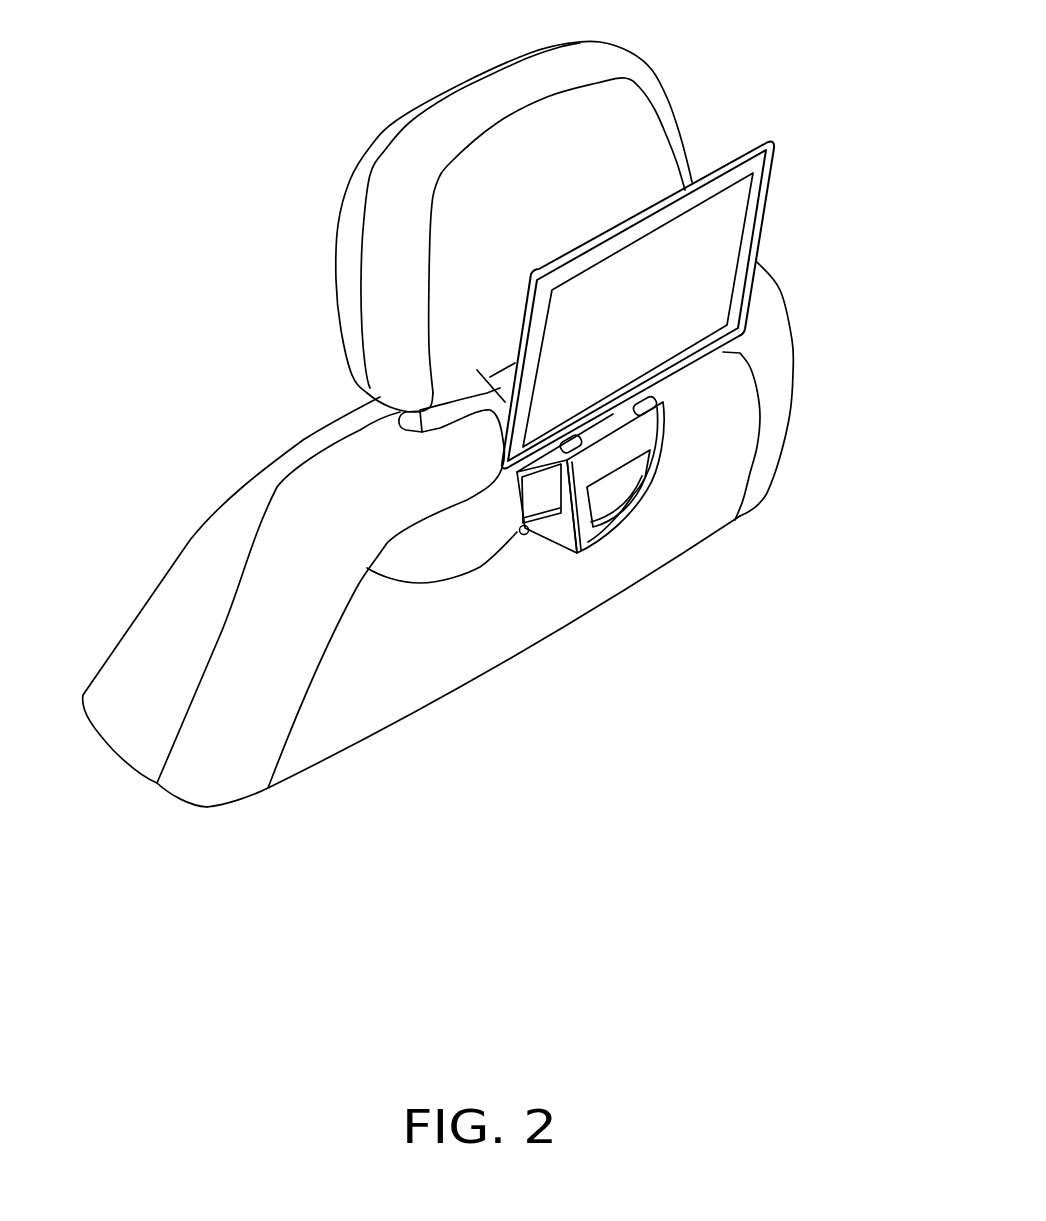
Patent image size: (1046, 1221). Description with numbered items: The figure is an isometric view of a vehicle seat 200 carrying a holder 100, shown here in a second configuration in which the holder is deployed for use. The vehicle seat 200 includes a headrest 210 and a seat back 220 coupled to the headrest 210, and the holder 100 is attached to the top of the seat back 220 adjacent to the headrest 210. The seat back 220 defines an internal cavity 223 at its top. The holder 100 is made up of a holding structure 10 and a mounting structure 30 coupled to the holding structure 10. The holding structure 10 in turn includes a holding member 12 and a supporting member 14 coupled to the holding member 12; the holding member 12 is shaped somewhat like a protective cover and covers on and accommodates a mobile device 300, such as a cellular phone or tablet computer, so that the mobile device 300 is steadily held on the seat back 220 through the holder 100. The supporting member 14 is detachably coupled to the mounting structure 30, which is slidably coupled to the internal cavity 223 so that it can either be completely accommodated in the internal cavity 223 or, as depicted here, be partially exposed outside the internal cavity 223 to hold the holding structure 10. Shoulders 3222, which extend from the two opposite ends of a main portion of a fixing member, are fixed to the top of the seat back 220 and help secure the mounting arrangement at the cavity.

The holder 100 is at (836, 627).
The holding structure 10 is at (750, 618).
The holding member 12 is at (573, 534).
The supporting member 14 is at (598, 432).
The mounting structure 30 is at (668, 440).
The mobile device 300 is at (760, 187).
The shoulders 3222 is at (520, 527).
The vehicle seat 200 is at (233, 205).
The headrest 210 is at (380, 272).
The seat back 220 is at (375, 453).
The internal cavity 223 is at (367, 568).